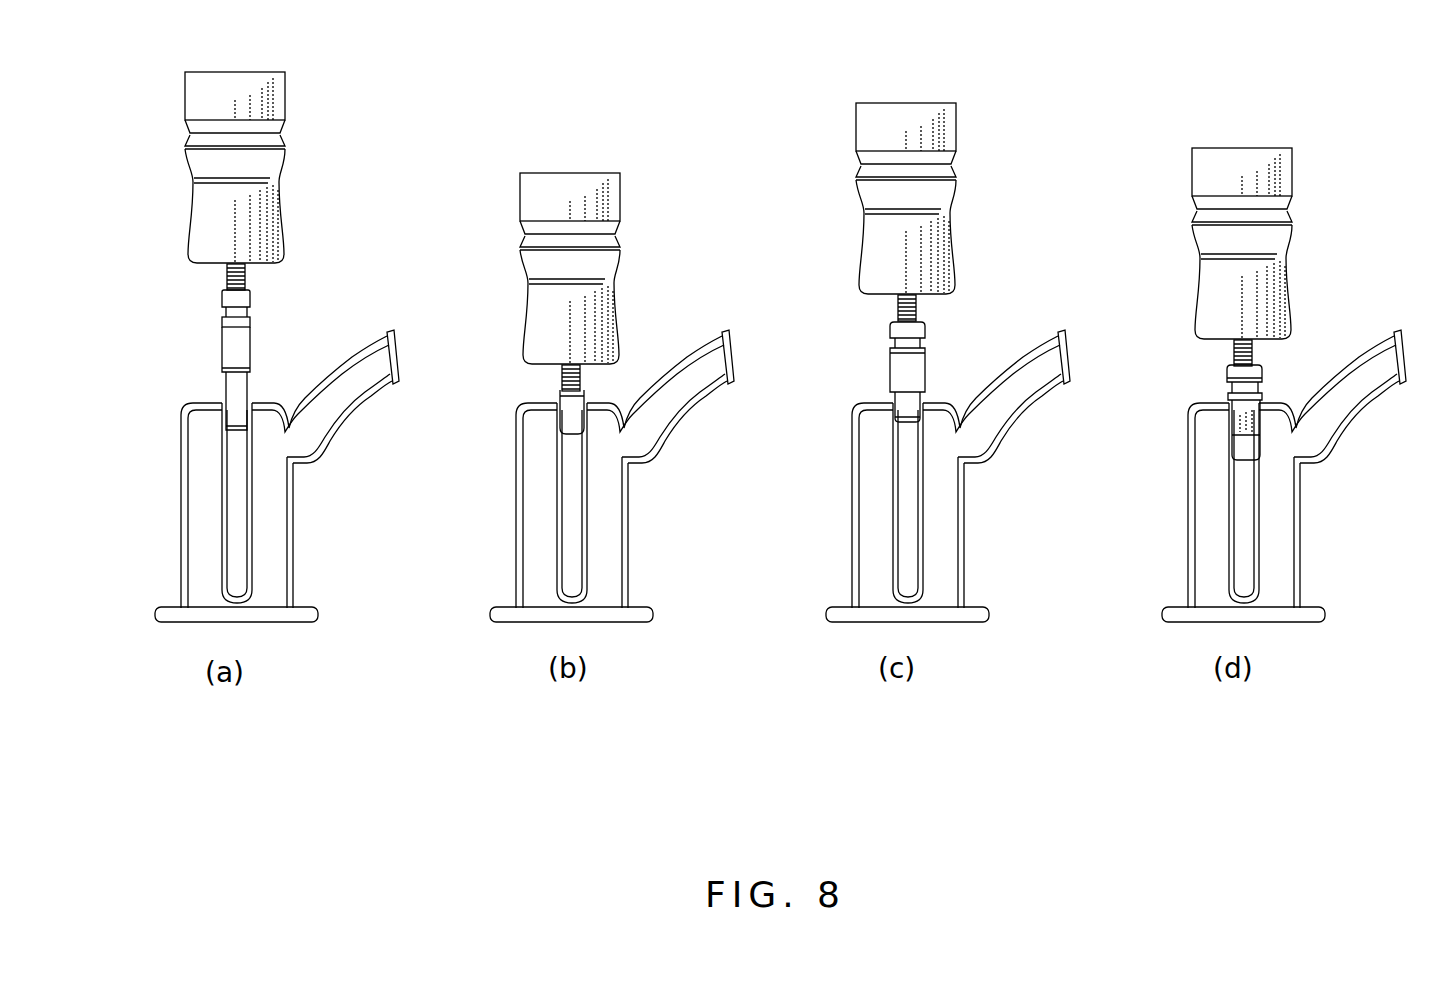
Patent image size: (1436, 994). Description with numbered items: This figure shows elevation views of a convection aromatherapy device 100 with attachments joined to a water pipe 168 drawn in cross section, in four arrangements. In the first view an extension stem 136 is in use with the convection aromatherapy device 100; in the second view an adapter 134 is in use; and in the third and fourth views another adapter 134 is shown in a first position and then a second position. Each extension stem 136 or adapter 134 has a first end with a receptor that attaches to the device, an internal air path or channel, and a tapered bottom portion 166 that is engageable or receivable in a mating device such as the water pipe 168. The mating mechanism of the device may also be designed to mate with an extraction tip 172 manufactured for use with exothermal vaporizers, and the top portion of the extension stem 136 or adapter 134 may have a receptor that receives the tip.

The convection aromatherapy device 100 is at (273, 93).
The adapter 134 is at (558, 390).
The extension stem 136 is at (240, 345).
The tapered bottom portion 166 is at (230, 417).
The water pipe 168 is at (185, 497).
The extraction tip 172 is at (223, 278).